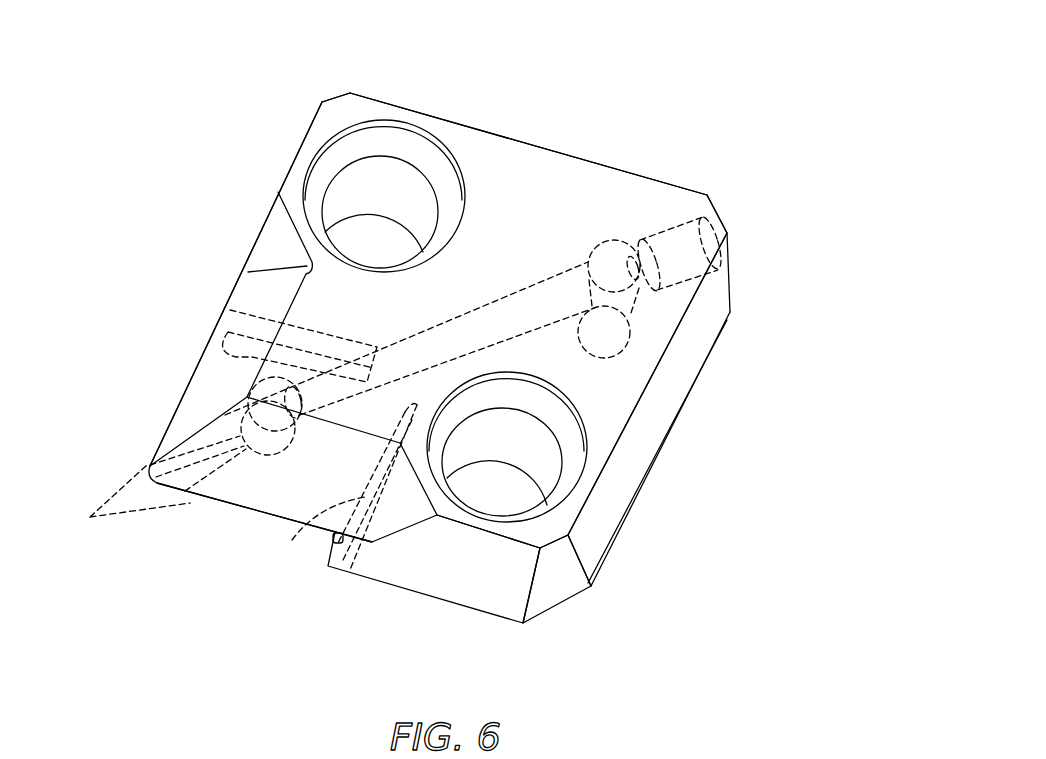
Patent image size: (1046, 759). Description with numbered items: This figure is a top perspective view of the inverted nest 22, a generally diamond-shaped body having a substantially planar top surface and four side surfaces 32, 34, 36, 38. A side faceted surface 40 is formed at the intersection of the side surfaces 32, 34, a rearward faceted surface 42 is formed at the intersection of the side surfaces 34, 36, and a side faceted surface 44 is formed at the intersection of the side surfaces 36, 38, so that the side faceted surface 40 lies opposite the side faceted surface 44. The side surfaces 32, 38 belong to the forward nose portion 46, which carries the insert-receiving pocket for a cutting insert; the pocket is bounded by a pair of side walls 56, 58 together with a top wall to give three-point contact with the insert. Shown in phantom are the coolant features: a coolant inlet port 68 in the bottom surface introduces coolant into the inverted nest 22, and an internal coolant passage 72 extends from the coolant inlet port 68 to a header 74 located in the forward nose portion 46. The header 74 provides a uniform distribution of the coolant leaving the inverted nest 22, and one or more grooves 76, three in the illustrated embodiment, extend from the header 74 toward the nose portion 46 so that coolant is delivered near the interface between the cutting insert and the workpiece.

The inverted nest 22 is at (753, 140).
The side surface 32 is at (246, 242).
The side surface 34 is at (517, 131).
The side surface 36 is at (689, 443).
The side surface 38 is at (410, 565).
The side faceted surface 40 is at (337, 99).
The rearward faceted surface 42 is at (717, 217).
The side faceted surface 44 is at (555, 592).
The forward nose portion 46 is at (127, 440).
The side wall 56 is at (235, 362).
The side wall 58 is at (343, 502).
The coolant inlet port 68 is at (613, 252).
The internal coolant passage 72 is at (528, 308).
The header 74 is at (267, 438).
The grooves 76 is at (154, 487).